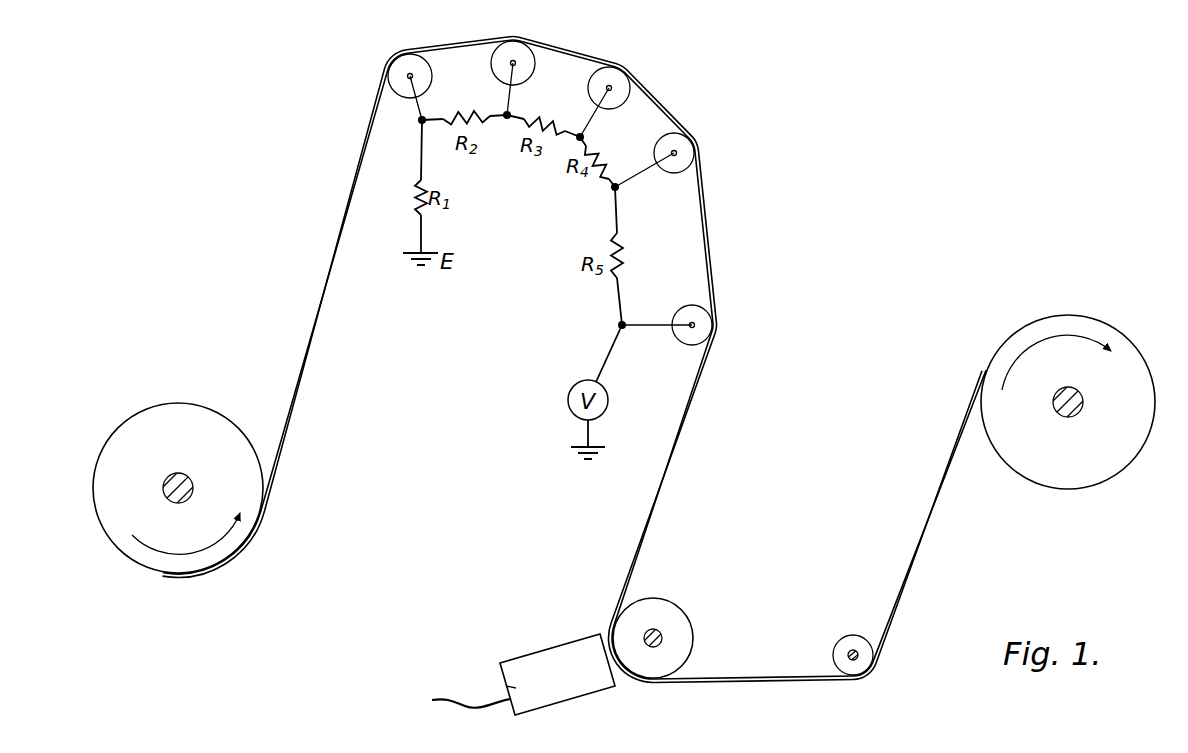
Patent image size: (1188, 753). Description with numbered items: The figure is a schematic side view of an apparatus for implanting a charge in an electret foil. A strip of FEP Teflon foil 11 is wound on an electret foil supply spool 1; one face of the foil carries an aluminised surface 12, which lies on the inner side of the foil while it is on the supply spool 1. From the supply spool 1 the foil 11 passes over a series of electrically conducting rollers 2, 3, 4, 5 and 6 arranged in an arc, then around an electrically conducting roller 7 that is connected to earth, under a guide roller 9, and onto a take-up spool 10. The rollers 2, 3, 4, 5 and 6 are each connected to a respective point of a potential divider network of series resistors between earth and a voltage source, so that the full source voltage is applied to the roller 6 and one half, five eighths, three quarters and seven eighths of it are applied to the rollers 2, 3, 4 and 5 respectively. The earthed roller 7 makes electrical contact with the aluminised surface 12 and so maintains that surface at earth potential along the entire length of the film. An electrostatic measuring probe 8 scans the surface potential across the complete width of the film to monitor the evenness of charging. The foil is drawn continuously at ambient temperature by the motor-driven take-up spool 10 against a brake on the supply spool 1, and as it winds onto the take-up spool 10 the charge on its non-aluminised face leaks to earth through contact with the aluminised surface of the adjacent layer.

The electret foil supply spool 1 is at (184, 412).
The electrically conducting roller 2 is at (390, 78).
The electrically conducting roller 3 is at (496, 71).
The electrically conducting roller 4 is at (592, 84).
The electrically conducting roller 5 is at (659, 143).
The electrically conducting roller 6 is at (684, 312).
The earthed electrically conducting roller 7 is at (673, 622).
The electrostatic measuring probe 8 is at (555, 660).
The guide roller 9 is at (848, 640).
The take-up spool 10 is at (1106, 462).
The FEP Teflon foil 11 is at (320, 312).
The aluminised surface 12 is at (347, 192).